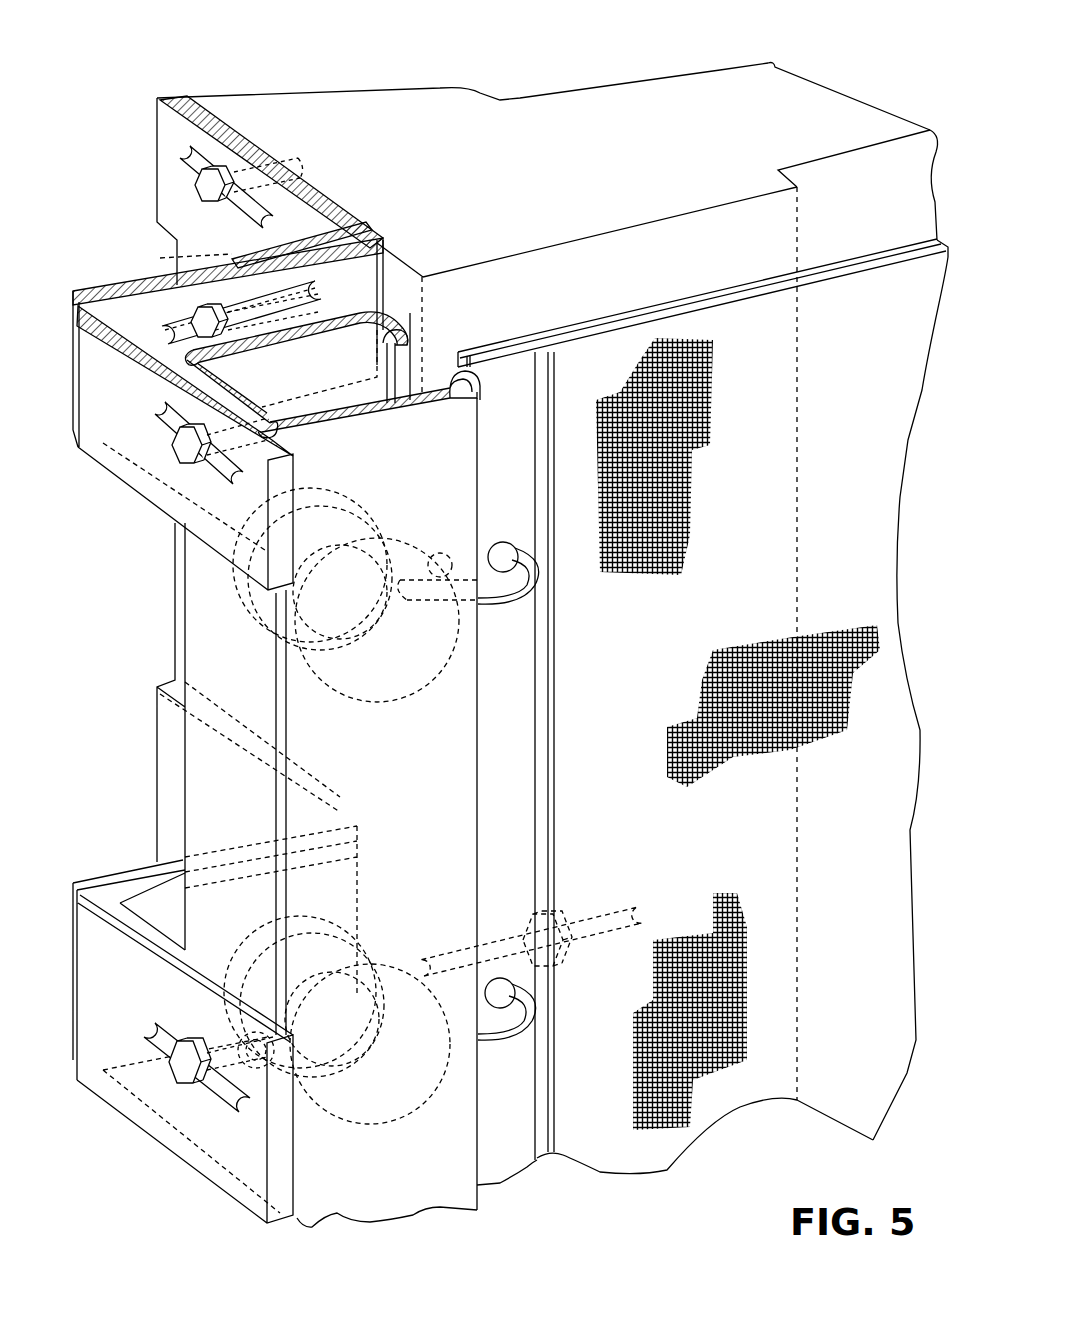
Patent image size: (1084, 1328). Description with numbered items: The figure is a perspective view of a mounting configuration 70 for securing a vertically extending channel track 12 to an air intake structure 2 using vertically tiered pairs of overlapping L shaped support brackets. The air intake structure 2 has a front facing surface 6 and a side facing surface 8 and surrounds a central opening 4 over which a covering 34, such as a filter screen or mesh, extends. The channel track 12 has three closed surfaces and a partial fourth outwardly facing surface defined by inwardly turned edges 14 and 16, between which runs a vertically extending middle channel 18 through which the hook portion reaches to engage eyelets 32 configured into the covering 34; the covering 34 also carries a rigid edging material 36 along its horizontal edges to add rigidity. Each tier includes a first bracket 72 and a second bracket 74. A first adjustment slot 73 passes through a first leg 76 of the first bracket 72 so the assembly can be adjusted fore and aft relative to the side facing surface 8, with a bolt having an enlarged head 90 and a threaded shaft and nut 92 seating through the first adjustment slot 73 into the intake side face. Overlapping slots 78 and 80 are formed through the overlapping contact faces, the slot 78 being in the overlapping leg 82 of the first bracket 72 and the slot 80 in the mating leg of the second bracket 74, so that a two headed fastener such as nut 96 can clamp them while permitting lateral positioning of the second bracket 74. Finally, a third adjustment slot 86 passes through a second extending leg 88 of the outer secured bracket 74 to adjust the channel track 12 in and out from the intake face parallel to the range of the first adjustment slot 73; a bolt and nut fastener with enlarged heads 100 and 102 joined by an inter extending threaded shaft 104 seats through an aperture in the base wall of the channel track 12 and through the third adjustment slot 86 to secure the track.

The air intake structure 2 is at (388, 118).
The central opening 4 is at (868, 205).
The front facing surface 6 is at (640, 253).
The side facing surface 8 is at (243, 148).
The channel track 12 is at (410, 476).
The inwardly turned edge 14 is at (413, 340).
The inwardly turned edge 16 is at (472, 365).
The middle channel 18 is at (402, 366).
The eyelets 32 is at (497, 540).
The covering 34 is at (880, 388).
The rigid edging material 36 is at (508, 352).
The mounting configuration 70 is at (118, 236).
The first L shaped support bracket 72 is at (338, 233).
The first adjustment slot 73 is at (187, 168).
The second L shaped support bracket 74 is at (78, 327).
The first leg 76 is at (165, 128).
The overlapping slot 78 is at (183, 259).
The overlapping slot 80 is at (313, 320).
The overlapping leg 82 is at (105, 292).
The third adjustment slot 86 is at (153, 408).
The second extending leg 88 is at (183, 513).
The bolt with enlarged head 90 is at (208, 178).
The threaded shaft and nut 92 is at (288, 137).
The nut 96 is at (217, 328).
The enlarged bolt head 100 is at (177, 455).
The enlarged head 102 is at (262, 405).
The threaded shaft 104 is at (280, 426).